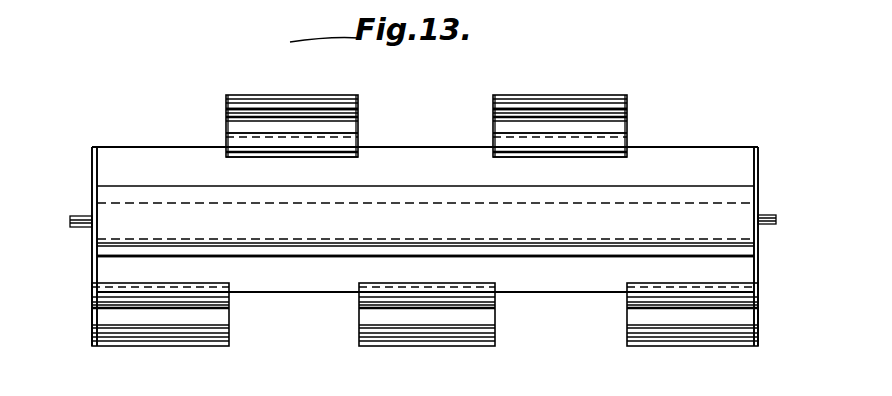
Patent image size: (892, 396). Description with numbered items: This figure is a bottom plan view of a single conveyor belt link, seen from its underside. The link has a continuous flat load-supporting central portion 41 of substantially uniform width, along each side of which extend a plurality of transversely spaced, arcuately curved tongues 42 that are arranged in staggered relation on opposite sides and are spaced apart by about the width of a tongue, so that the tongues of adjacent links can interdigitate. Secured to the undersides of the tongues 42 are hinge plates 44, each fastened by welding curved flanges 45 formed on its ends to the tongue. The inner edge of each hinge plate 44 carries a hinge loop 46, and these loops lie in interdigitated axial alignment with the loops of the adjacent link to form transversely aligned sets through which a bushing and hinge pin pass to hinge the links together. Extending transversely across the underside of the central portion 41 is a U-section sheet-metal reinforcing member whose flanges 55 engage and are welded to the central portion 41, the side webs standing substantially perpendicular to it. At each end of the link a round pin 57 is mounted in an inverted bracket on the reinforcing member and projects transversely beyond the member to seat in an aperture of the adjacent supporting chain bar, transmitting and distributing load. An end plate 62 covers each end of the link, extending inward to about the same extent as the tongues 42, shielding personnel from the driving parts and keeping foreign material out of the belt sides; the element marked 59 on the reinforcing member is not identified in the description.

The casing 41 is at (157, 155).
The upper pole block 42 is at (493, 97).
The laminations 44 is at (493, 126).
The insulating layer 45 is at (493, 113).
The lower lamination layer 46 is at (493, 151).
The core 55 is at (743, 250).
The shaft stub 57 is at (72, 215).
The lower pole block 59 is at (262, 229).
The end plate 62 is at (92, 157).